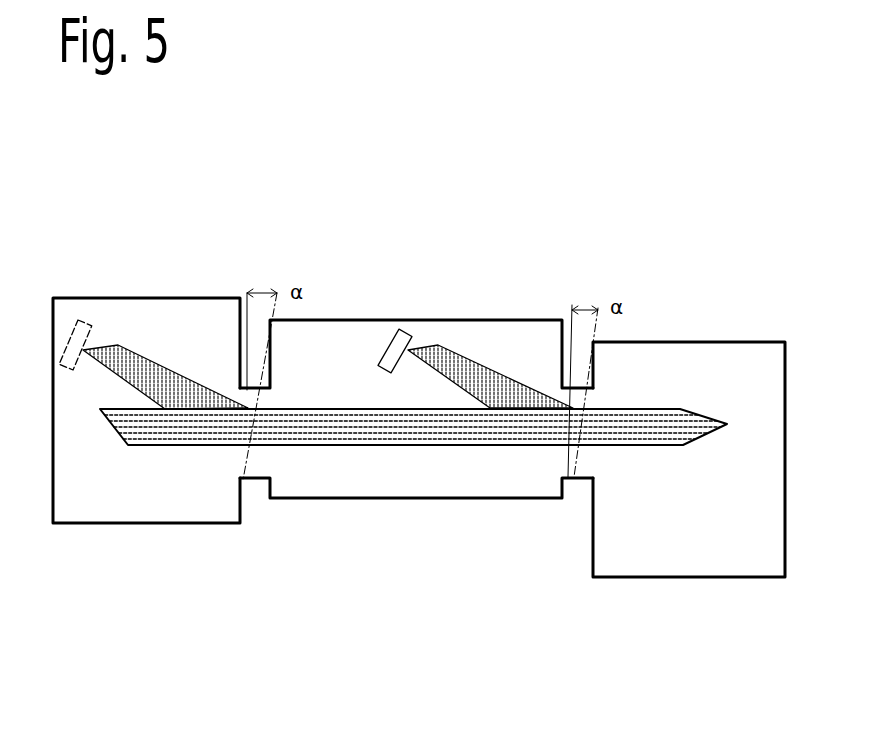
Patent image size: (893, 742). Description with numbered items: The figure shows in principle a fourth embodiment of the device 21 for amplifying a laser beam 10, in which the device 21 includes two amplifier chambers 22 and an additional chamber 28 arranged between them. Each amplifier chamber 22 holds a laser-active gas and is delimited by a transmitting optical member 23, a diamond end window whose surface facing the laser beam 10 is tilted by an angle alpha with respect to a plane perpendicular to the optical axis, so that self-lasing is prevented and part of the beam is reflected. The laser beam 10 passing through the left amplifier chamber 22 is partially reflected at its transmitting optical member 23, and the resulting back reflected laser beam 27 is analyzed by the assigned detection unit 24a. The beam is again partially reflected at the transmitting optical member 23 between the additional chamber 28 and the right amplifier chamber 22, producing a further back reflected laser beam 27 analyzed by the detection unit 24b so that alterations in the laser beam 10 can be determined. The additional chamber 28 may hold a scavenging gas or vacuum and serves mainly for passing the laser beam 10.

The laser beam 10 is at (330, 450).
The device for amplifying the laser beam 21 is at (655, 180).
The amplifier chamber 22 is at (163, 318).
The transmitting optical member 23 is at (243, 457).
The detection unit 24a is at (90, 322).
The detection unit 24b is at (397, 330).
The back reflected laser beam 27 is at (178, 382).
The additional chamber 28 is at (418, 475).